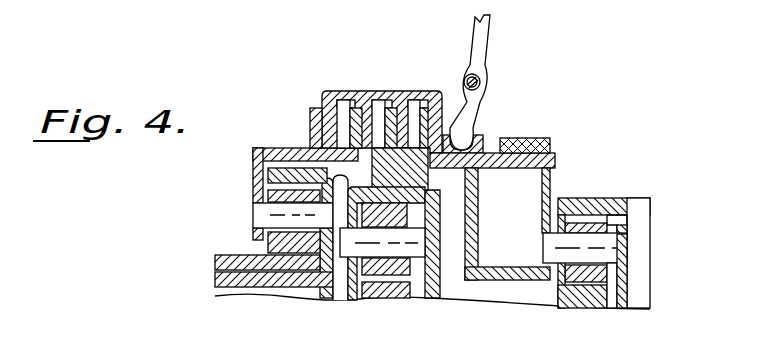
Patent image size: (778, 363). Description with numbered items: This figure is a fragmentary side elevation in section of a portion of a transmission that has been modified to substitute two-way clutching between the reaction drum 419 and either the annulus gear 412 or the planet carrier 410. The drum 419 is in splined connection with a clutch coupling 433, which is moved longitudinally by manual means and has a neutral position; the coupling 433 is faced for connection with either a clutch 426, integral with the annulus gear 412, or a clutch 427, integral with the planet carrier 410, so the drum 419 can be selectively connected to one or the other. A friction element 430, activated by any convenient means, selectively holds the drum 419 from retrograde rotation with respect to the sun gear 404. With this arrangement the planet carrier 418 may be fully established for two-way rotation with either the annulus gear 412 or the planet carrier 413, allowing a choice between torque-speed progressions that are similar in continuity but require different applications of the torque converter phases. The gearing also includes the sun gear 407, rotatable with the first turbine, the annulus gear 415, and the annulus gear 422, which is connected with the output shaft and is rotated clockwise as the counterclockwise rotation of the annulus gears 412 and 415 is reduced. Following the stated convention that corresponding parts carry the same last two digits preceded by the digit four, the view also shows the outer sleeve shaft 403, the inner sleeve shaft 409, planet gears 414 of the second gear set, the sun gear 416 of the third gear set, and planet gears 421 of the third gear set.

The mounting plate 403 is at (236, 256).
The sun gear 404 is at (263, 257).
The sun gear 407 is at (366, 300).
The base plate 409 is at (262, 284).
The planet carrier 410 is at (254, 191).
The annulus gear 412 is at (277, 171).
The planet carrier 413 is at (404, 217).
The bearing 414 is at (400, 270).
The annulus gear 415 is at (402, 200).
The bearing 416 is at (598, 298).
The planet carrier 418 is at (628, 231).
The reaction drum 419 is at (553, 165).
The shaft 421 is at (600, 239).
The annulus gear 422 is at (599, 198).
The clutch 426 is at (441, 112).
The clutch 427 is at (312, 113).
The friction element 430 is at (524, 138).
The clutch coupling 433 is at (380, 91).